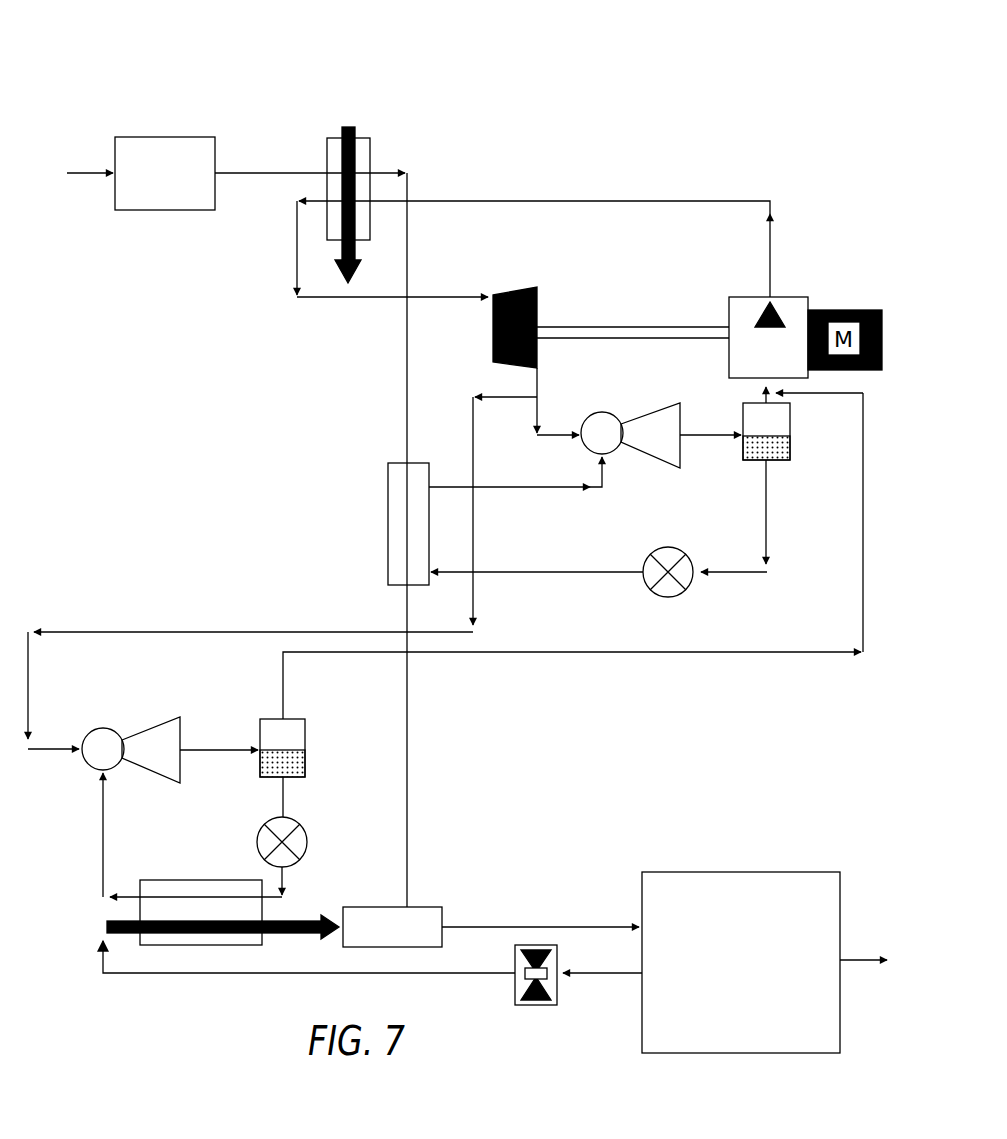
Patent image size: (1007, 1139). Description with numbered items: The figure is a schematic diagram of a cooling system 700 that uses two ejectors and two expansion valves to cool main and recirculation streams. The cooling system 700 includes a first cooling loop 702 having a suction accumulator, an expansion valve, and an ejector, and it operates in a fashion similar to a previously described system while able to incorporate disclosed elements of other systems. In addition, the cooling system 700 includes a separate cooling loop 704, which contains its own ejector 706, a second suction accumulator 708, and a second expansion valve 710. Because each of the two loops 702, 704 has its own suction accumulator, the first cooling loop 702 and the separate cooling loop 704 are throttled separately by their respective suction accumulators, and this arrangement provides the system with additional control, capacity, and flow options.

The cooling system 700 is at (136, 71).
The first cooling loop 702 is at (803, 473).
The separate cooling loop 704 is at (12, 626).
The ejector 706 is at (88, 766).
The second suction accumulator 708 is at (307, 745).
The second expansion valve 710 is at (261, 832).